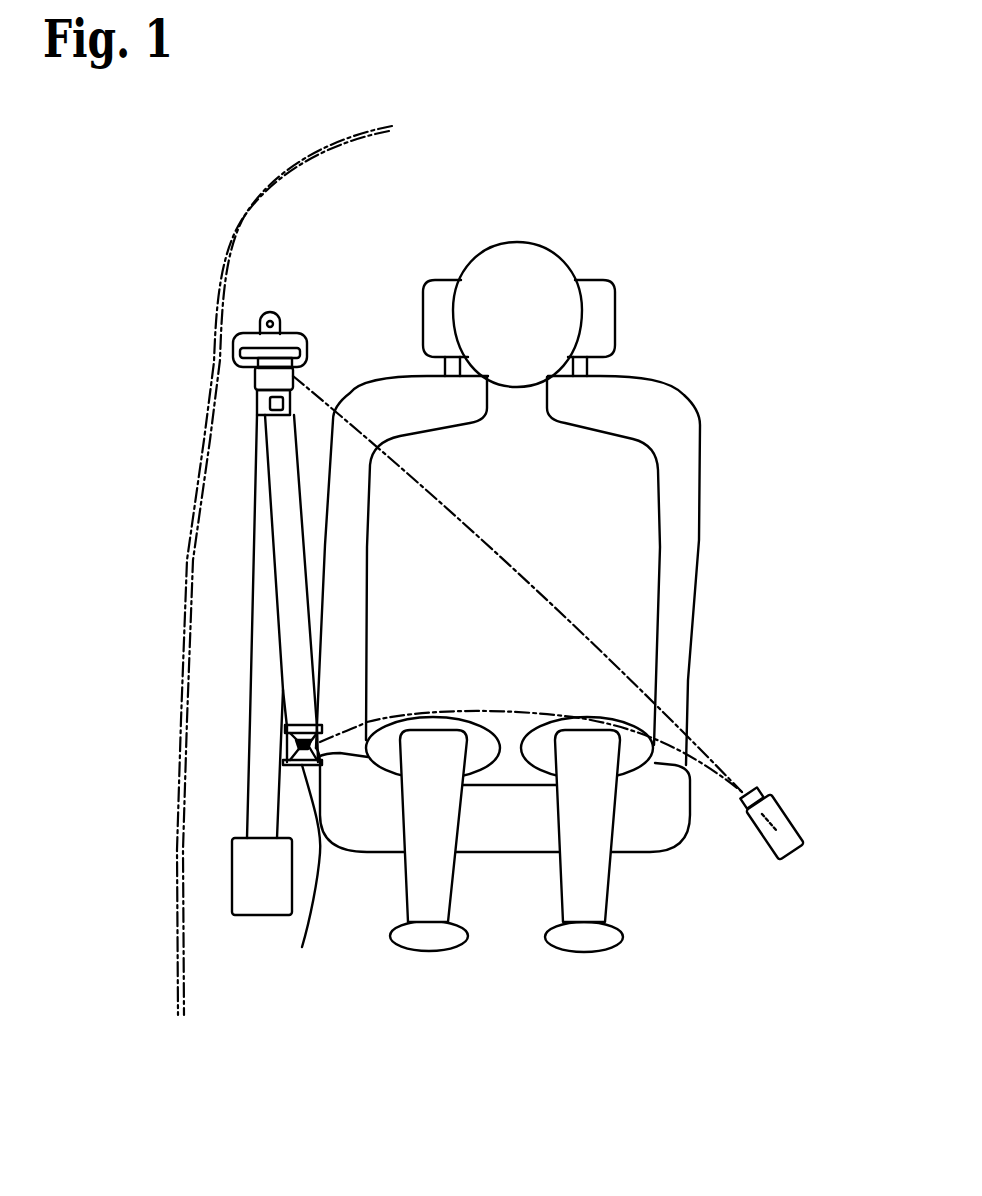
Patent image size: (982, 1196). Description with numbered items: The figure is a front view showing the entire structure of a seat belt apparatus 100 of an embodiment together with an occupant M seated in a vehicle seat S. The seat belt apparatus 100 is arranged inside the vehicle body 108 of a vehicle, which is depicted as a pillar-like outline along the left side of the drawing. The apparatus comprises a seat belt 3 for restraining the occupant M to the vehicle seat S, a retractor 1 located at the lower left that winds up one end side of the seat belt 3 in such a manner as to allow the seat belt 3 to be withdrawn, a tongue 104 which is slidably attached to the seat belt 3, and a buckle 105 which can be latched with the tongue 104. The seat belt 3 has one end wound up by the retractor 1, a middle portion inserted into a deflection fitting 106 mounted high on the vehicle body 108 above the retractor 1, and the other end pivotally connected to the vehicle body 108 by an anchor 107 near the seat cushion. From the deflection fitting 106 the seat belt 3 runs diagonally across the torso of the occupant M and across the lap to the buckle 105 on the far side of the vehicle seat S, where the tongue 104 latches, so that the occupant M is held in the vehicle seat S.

The seat belt apparatus 100 is at (225, 653).
The retractor 1 is at (243, 898).
The seat belt 3 is at (257, 783).
The tongue 104 is at (260, 377).
The buckle 105 is at (794, 823).
The deflection fitting 106 is at (283, 334).
The anchor 107 is at (300, 857).
The vehicle body 108 is at (220, 270).
The occupant M is at (513, 240).
The vehicle seat S is at (700, 516).